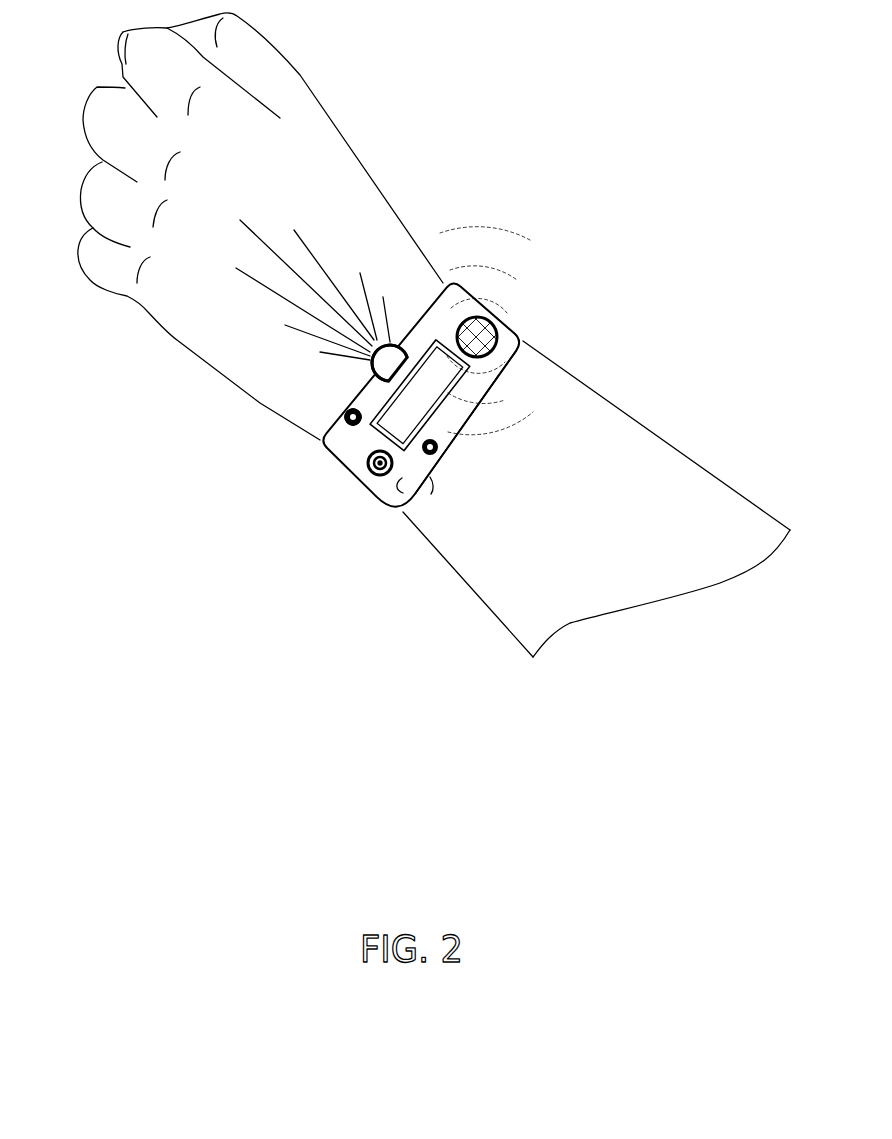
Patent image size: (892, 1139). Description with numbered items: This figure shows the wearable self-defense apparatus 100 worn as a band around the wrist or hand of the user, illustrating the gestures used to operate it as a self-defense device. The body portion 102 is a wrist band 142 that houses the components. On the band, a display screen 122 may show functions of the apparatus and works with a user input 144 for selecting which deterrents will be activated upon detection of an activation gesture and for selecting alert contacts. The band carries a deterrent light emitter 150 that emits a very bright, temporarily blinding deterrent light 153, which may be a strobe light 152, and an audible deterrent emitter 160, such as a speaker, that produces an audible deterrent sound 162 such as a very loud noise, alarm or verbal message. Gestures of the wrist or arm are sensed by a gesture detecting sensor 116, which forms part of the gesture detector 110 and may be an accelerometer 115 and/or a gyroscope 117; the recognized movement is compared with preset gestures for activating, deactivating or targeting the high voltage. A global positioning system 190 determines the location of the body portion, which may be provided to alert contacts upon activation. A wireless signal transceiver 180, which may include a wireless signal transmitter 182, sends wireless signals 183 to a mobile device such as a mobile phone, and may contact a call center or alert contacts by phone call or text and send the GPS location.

The wearable self-defense apparatus 100 is at (488, 305).
The body portion 102 is at (512, 365).
The gesture detector 110 is at (343, 413).
The accelerometer 115 is at (347, 408).
The gesture detecting sensor 116 is at (347, 412).
The gyroscope 117 is at (352, 410).
The display screen 122 is at (393, 435).
The wrist band 142 is at (513, 347).
The user input 144 is at (447, 387).
The deterrent light emitter 150 is at (390, 347).
The strobe light 152 is at (397, 347).
The deterrent light 153 is at (267, 243).
The audible deterrent emitter 160 is at (500, 332).
The audible deterrent sound 162 is at (507, 225).
The wireless signal transceiver 180 is at (378, 477).
The wireless signal transmitter 182 is at (368, 466).
The wireless signals 183 is at (432, 480).
The global positioning system (GPS) 190 is at (437, 448).